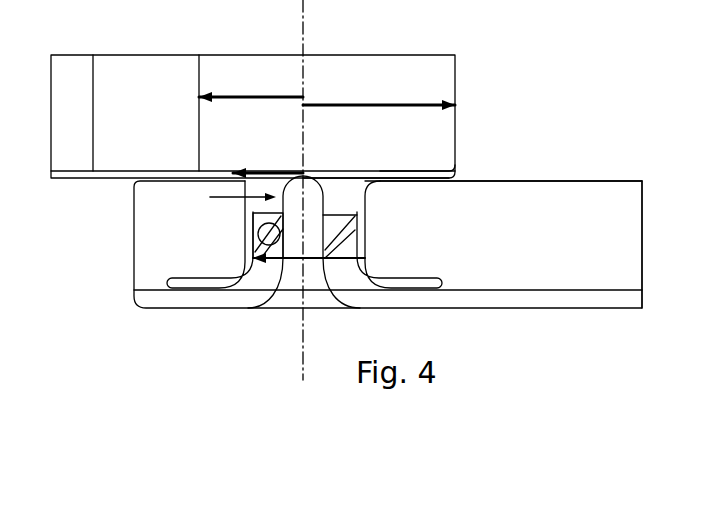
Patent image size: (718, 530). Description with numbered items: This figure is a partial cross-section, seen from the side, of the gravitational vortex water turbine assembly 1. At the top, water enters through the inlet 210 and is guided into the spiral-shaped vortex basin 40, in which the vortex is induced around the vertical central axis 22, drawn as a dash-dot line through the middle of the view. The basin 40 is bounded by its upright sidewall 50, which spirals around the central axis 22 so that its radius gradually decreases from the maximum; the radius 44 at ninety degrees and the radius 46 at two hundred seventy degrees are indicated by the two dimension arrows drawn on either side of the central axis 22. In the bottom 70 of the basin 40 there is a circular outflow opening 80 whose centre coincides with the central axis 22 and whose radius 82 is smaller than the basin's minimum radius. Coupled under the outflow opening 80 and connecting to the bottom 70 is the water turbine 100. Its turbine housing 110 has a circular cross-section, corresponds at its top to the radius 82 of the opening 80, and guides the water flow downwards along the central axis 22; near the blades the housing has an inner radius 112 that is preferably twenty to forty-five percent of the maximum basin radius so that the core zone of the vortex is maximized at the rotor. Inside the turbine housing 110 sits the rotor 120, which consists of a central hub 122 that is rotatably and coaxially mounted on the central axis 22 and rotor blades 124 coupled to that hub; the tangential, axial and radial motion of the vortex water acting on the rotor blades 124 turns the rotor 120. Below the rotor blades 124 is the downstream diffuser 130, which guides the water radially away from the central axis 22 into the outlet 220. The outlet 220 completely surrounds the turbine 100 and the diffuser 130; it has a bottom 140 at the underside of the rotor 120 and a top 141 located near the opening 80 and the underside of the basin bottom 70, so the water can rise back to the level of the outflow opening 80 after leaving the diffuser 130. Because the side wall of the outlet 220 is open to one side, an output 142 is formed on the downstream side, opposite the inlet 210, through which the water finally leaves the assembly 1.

The gravitational vortex water turbine assembly 1 is at (85, 317).
The central axis 22 is at (303, 377).
The spiral-shaped vortex basin 40 is at (472, 94).
The radius 44 is at (379, 99).
The radius 46 is at (251, 90).
The upright sidewall 50 is at (395, 64).
The bottom 70 is at (391, 164).
The outflow opening 80 is at (338, 174).
The radius 82 is at (268, 163).
The water turbine 100 is at (385, 220).
The turbine housing 110 is at (248, 243).
The inner radius 112 is at (283, 262).
The rotor 120 is at (210, 197).
The central hub 122 is at (282, 300).
The rotor blades 124 is at (337, 239).
The downstream diffuser 130 is at (438, 286).
The bottom 140 is at (503, 308).
The top 141 is at (540, 181).
The output 142 is at (635, 256).
The inlet 210 is at (142, 66).
The outlet 220 is at (586, 188).